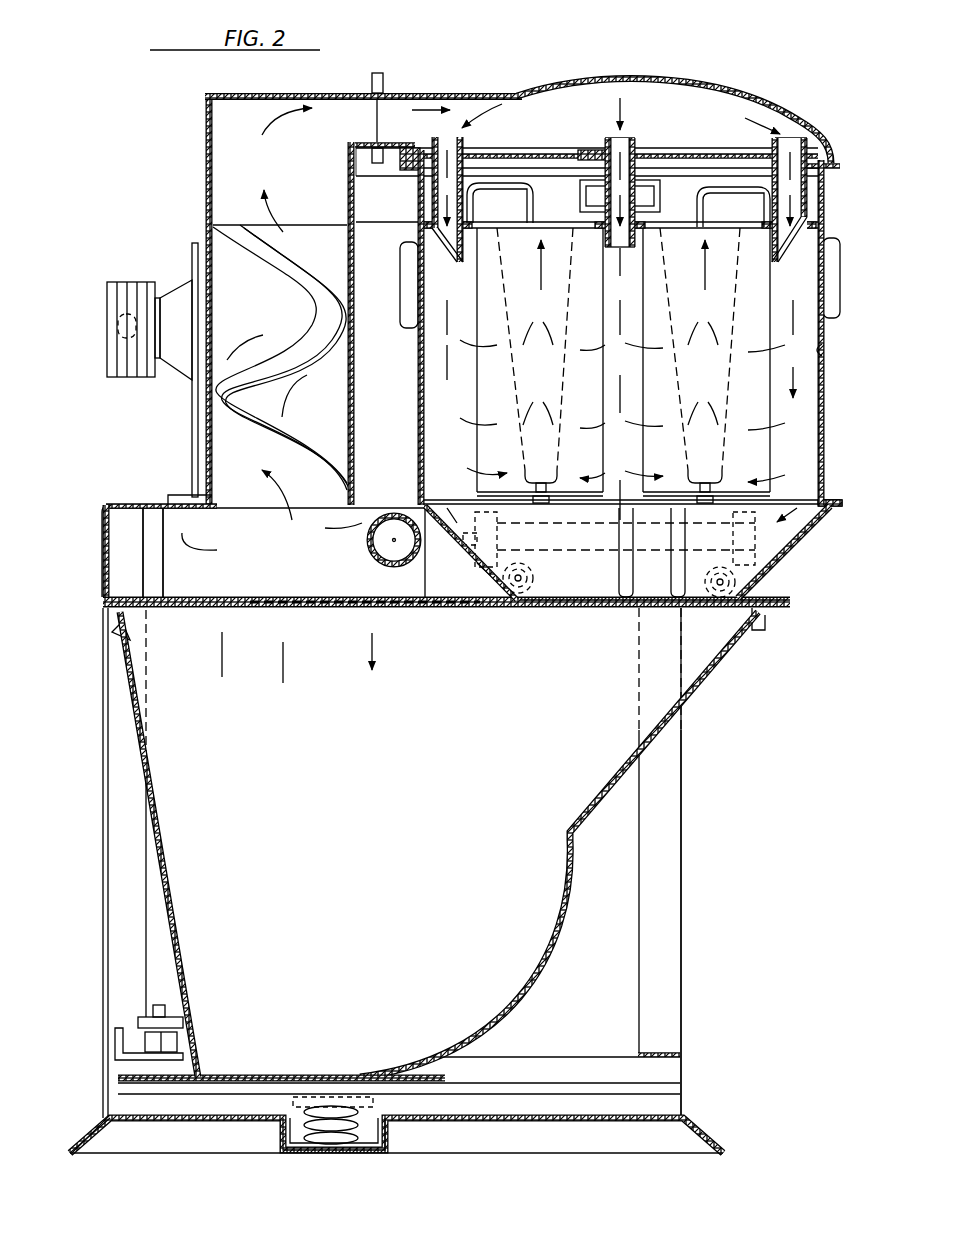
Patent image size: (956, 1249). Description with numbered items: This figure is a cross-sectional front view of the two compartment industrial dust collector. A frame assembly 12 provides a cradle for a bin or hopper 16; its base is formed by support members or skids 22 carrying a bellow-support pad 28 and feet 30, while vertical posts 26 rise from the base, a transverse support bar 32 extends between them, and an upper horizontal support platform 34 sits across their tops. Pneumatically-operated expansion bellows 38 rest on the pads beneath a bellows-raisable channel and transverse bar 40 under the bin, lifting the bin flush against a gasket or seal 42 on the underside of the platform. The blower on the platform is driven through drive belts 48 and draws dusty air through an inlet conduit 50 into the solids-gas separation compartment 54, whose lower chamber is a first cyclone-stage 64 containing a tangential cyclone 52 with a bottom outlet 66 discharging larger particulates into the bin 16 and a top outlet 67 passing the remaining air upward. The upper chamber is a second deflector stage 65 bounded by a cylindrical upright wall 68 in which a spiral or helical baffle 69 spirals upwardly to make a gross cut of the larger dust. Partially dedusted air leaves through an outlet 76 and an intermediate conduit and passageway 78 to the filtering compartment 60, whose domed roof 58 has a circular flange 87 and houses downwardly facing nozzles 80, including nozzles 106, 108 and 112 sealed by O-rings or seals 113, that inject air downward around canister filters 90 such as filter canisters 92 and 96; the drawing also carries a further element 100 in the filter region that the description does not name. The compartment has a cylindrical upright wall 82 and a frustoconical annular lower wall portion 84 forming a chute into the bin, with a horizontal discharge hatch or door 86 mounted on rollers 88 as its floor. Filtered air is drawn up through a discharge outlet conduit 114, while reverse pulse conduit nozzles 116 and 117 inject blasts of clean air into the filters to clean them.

The frame assembly 12 is at (690, 1116).
The bin or hopper 16 is at (525, 985).
The support member or skid 22 is at (157, 1155).
The vertical post 26 is at (683, 805).
The bellows-support pad 28 is at (288, 1153).
The feet 30 is at (78, 1143).
The transverse support bar 32 is at (668, 1052).
The upper horizontal support platform 34 is at (103, 548).
The pneumatically-operated expansion bellows 38 is at (360, 1150).
The bellows-raisable channel and transverse bar 40 is at (375, 1116).
The gasket or seal 42 is at (768, 608).
The drive belts 48 is at (128, 283).
The inlet conduit 50 is at (370, 552).
The tangential cyclone stage 52 is at (163, 517).
The solids-gas separation compartment 54 is at (212, 505).
The domed roof or top 58 is at (740, 104).
The filtering compartment 60 is at (827, 237).
The first cyclone-stage 64 is at (430, 582).
The second deflector stage 65 is at (352, 437).
The bottom outlet 66 is at (210, 602).
The top outlet 67 is at (226, 505).
The cylindrical upright wall 68 is at (200, 418).
The spiral or helical baffle 69 is at (330, 345).
The outlet 76 is at (347, 145).
The intermediate conduit and passageway 78 is at (447, 97).
The downwardly facing nozzles 80 is at (641, 136).
The cylindrical upright wall 82 is at (822, 392).
The frustoconical annular lower wall portion 84 is at (790, 540).
The horizontal discharge hatch or door 86 is at (560, 607).
The circular flange 87 is at (832, 162).
The rollers 88 is at (825, 352).
The canister filters 90 is at (771, 453).
The filter canister 92 is at (598, 472).
The filter canister 96 is at (473, 455).
The filter cone 100 is at (503, 398).
The nozzle 106 is at (623, 252).
The nozzle 108 is at (793, 252).
The nozzle 112 is at (446, 252).
The O-rings or seals 113 is at (592, 155).
The discharge outlet conduit 114 is at (585, 180).
The air injector conduit nozzle 116 is at (554, 214).
The air injector conduit nozzle 117 is at (690, 215).